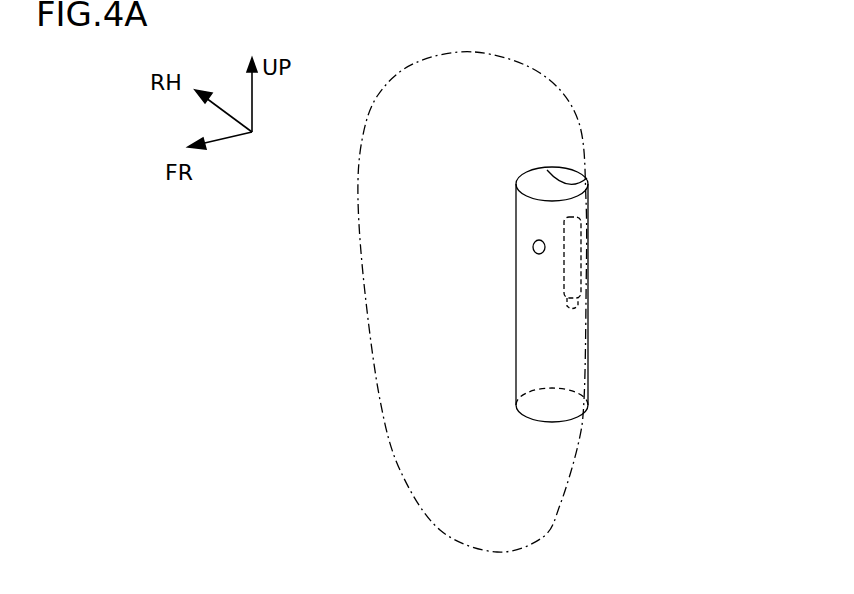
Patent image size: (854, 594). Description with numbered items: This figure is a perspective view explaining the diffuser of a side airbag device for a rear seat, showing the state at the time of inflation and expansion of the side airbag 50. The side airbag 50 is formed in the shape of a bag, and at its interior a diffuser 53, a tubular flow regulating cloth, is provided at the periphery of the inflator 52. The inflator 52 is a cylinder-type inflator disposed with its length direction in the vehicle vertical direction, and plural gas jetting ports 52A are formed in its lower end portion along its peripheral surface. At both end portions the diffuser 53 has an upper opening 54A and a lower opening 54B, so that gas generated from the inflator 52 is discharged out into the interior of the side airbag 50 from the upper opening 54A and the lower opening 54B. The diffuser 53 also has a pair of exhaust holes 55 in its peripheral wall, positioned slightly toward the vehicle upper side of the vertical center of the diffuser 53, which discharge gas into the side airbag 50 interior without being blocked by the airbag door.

The side airbag 50 is at (542, 537).
The inflator 52 is at (579, 257).
The gas jetting ports 52A is at (583, 305).
The diffuser 53 is at (558, 348).
The upper opening 54A is at (587, 180).
The lower opening 54B is at (553, 423).
The exhaust holes 55 is at (534, 255).